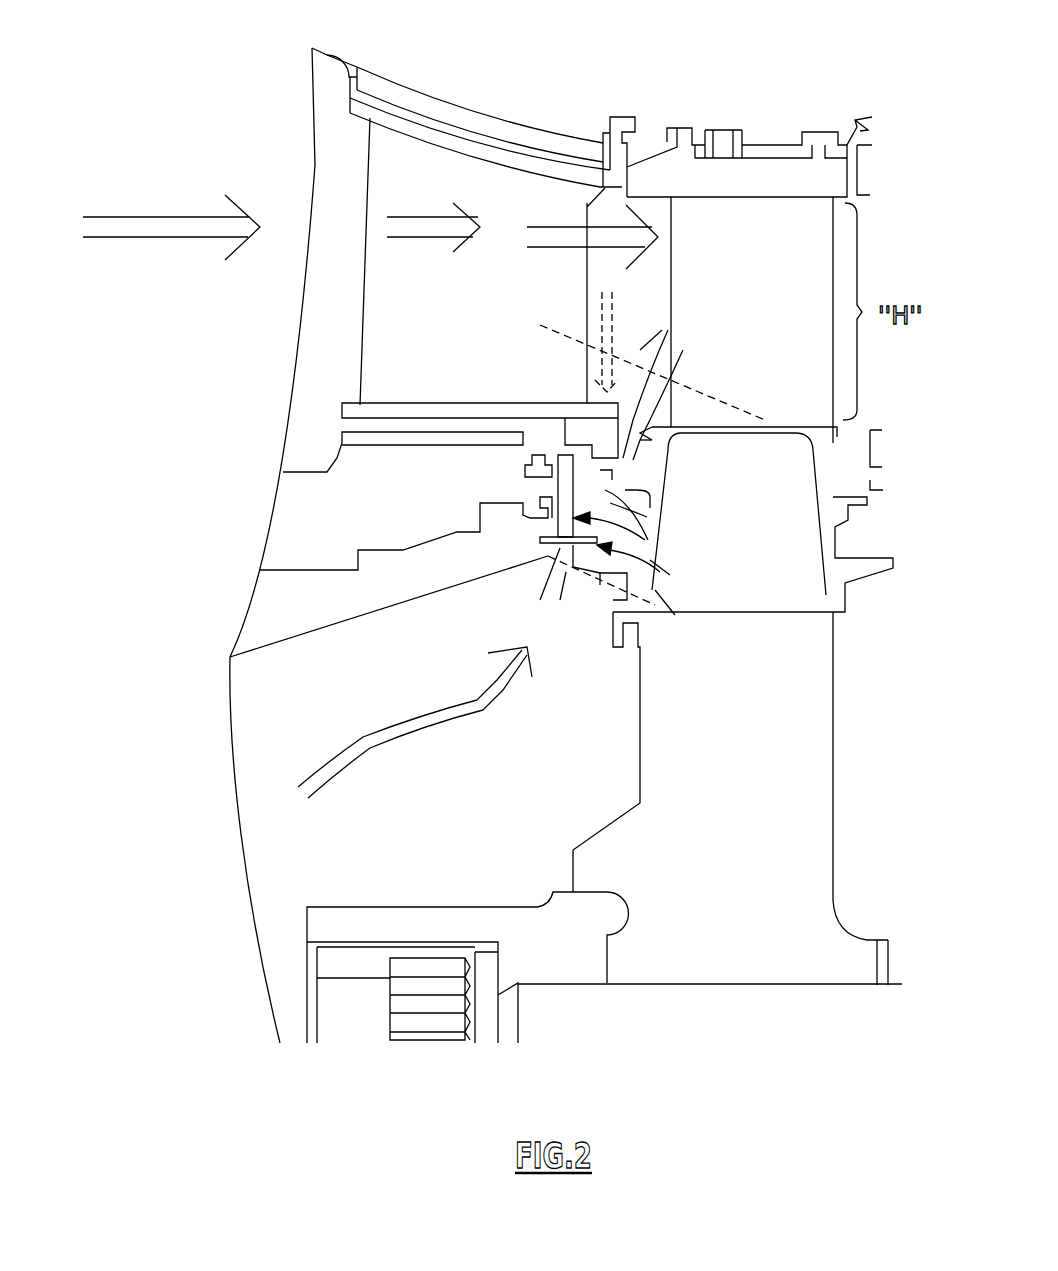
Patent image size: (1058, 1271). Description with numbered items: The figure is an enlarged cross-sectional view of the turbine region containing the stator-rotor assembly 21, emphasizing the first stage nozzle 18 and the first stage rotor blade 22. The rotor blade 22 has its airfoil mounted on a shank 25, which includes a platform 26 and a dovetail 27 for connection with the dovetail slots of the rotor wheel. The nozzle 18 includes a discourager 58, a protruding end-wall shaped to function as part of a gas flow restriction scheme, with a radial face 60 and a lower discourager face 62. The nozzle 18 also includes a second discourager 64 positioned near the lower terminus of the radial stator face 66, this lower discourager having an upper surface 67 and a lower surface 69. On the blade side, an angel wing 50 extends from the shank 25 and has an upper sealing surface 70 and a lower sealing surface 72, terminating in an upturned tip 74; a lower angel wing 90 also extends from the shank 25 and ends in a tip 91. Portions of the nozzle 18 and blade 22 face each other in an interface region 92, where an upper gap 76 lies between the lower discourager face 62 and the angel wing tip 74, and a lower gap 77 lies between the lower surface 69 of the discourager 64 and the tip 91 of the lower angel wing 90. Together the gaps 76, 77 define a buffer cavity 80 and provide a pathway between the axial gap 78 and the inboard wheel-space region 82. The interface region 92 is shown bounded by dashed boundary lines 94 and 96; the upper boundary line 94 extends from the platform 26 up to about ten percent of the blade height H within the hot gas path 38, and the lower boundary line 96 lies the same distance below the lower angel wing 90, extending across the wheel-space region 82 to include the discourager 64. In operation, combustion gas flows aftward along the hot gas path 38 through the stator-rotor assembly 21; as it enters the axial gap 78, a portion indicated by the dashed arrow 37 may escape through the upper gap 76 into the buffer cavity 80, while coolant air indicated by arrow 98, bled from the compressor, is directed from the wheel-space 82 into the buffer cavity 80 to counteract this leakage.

The first stage nozzle 18 is at (471, 337).
The stator-rotor assembly 21 is at (727, 116).
The rotor blade 22 is at (784, 304).
The shank 25 is at (789, 571).
The platform 26 is at (805, 426).
The dovetail 27 is at (747, 804).
The escaping hot gas portion 37 is at (588, 312).
The hot gas path 38 is at (180, 237).
The angel wing 50 is at (640, 476).
The discourager 58 is at (568, 415).
The radial face 60 is at (627, 427).
The lower discourager face 62 is at (643, 427).
The discourager 64 is at (540, 600).
The radial stator face 66 is at (648, 540).
The upper surface 67 is at (670, 575).
The lower surface 69 is at (560, 545).
The upper sealing surface 70 is at (645, 435).
The lower sealing surface 72 is at (665, 500).
The angel wing tip 74 is at (540, 540).
The upper gap 76 is at (540, 487).
The lower gap 77 is at (675, 615).
The axial gap 78 is at (640, 350).
The buffer cavity 80 is at (647, 517).
The wheel-space region 82 is at (449, 829).
The lower angel wing 90 is at (600, 585).
The tip of lower angel wing 91 is at (566, 572).
The interface region 92 is at (465, 527).
The upper boundary line 94 is at (765, 420).
The lower boundary line 96 is at (655, 605).
The coolant air stream 98 is at (470, 717).